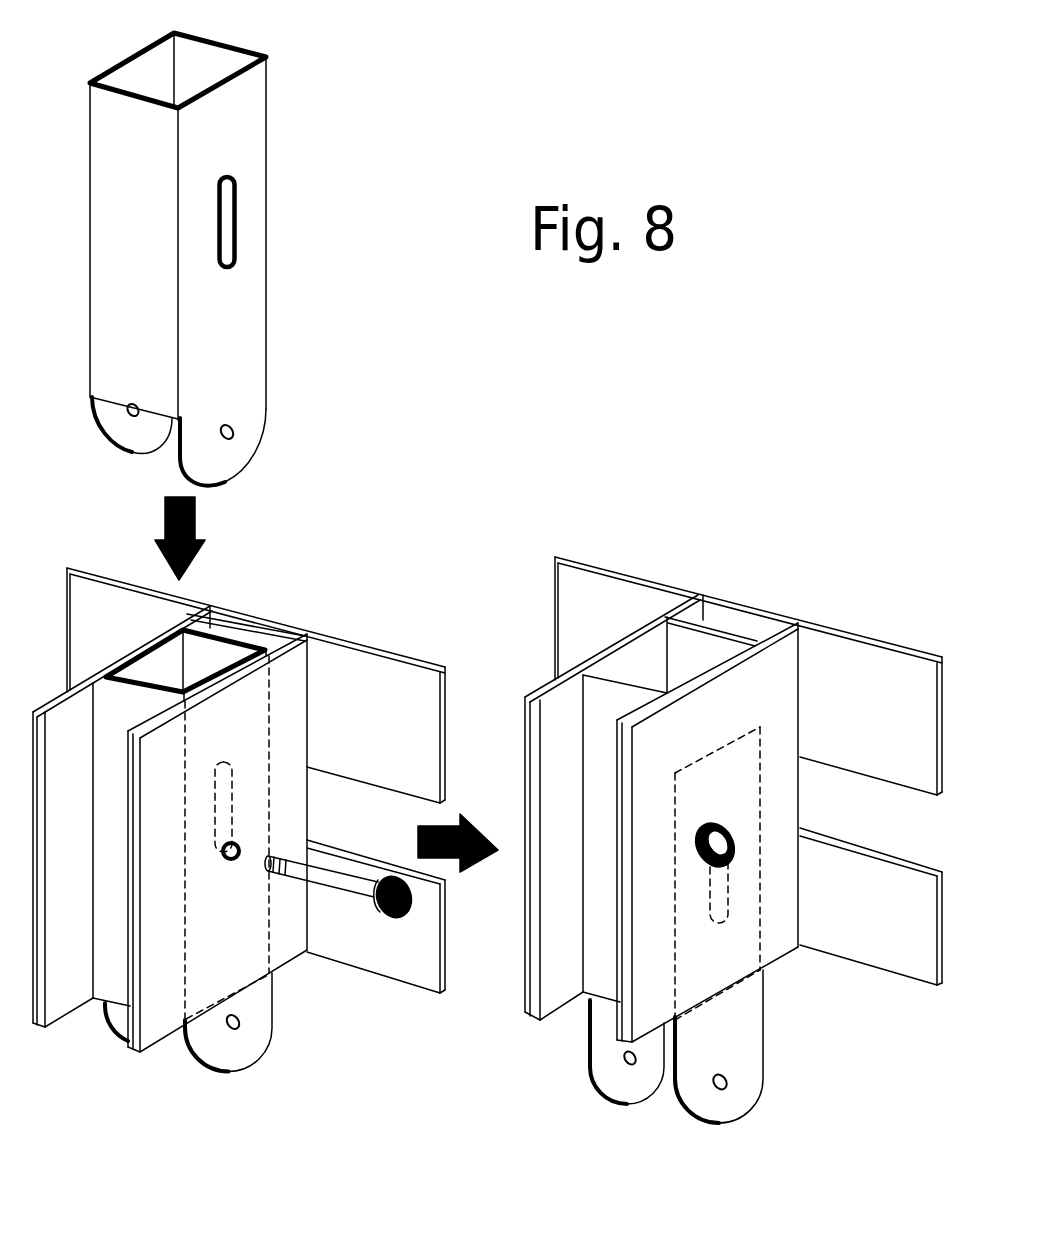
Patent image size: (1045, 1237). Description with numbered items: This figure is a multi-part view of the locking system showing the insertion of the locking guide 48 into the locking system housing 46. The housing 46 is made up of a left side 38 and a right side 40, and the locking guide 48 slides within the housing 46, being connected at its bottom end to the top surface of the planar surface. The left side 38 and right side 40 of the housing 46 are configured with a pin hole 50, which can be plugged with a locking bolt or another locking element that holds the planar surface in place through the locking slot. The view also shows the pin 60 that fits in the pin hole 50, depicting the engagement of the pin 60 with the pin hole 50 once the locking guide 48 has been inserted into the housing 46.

The left side 38 is at (292, 728).
The right side 40 is at (33, 708).
The housing 46 is at (120, 962).
The locking guide 48 is at (148, 268).
The pin hole 50 is at (214, 856).
The pin 60 is at (364, 893).